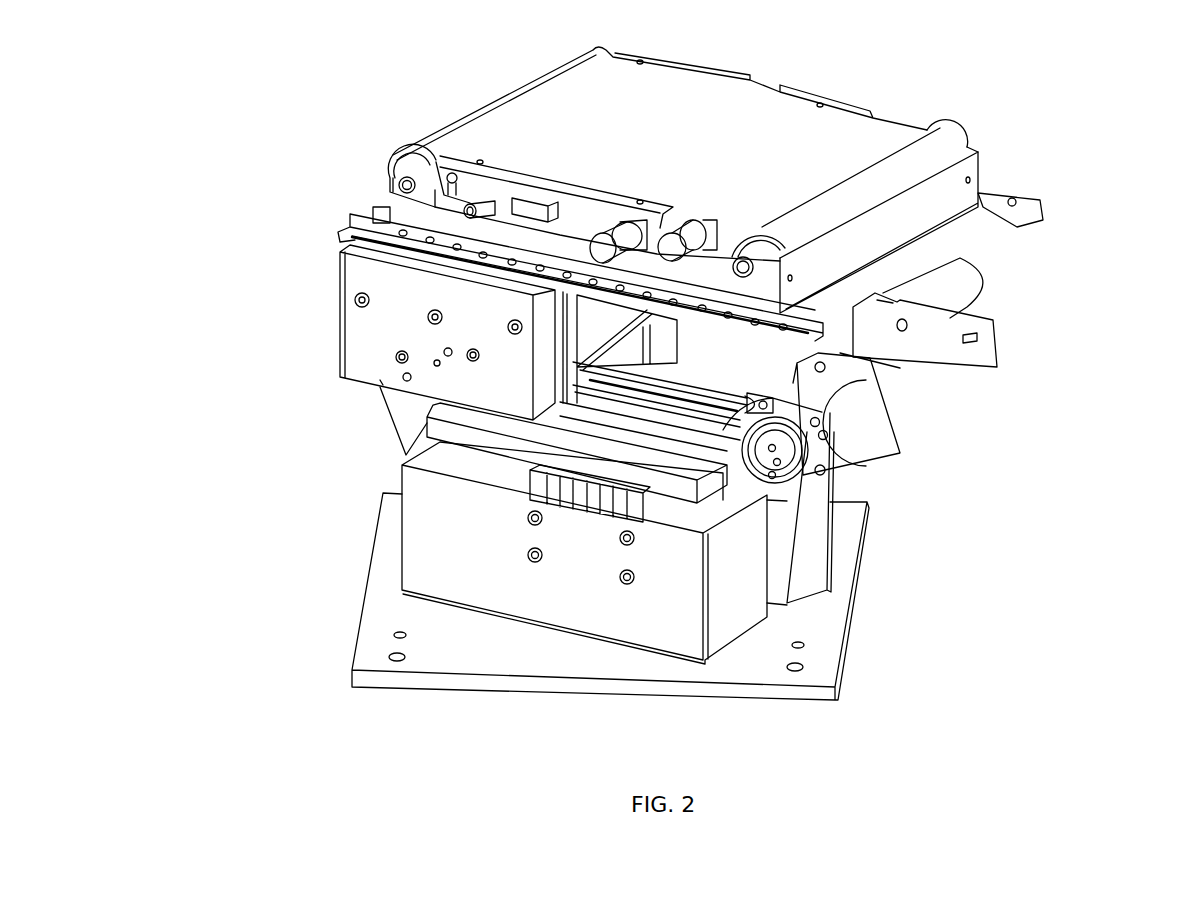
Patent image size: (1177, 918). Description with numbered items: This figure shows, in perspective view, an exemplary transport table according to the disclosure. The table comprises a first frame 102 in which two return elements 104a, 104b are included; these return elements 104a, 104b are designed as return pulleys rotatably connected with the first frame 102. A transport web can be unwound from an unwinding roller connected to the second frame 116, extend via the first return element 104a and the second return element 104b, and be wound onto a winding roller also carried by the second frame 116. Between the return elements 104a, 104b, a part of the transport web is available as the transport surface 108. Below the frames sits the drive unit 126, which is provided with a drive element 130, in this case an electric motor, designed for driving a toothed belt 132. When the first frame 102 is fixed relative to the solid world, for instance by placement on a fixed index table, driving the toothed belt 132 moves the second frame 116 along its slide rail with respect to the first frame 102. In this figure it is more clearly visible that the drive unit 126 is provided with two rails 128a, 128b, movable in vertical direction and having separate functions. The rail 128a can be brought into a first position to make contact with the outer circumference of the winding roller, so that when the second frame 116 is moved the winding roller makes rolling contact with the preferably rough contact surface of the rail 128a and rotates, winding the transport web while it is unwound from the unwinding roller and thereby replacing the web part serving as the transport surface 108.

The first frame 102 is at (948, 193).
The first return element 104a is at (968, 140).
The second return element 104b is at (397, 160).
The transport surface 108 is at (767, 130).
The second frame 116 is at (352, 273).
The drive unit 126 is at (808, 527).
The rail 128a is at (752, 437).
The rail 128b is at (433, 422).
The drive element 130 is at (923, 353).
The toothed belt 132 is at (830, 413).